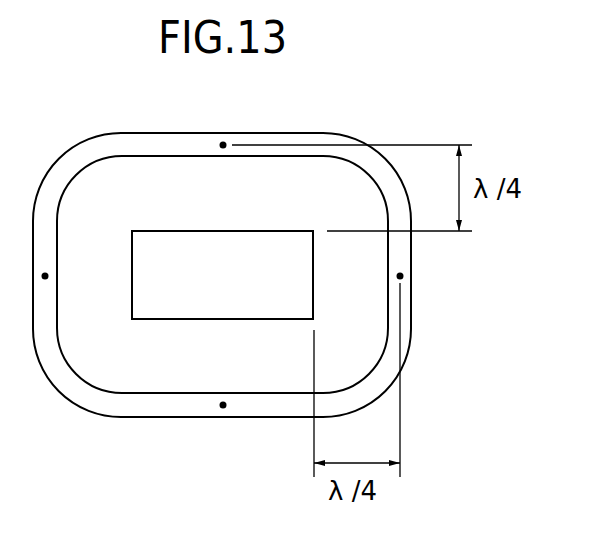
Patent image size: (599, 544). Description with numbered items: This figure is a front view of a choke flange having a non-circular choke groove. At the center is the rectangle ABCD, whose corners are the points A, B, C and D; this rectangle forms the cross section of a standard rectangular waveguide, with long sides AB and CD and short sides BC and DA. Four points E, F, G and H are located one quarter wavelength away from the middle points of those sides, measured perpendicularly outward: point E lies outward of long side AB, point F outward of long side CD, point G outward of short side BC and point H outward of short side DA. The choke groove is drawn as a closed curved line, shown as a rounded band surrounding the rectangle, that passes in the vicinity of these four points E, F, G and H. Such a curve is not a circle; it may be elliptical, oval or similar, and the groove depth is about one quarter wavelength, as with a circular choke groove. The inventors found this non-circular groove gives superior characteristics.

The corner point of rectangle A is at (143, 250).
The corner point of rectangle B is at (300, 250).
The corner point of rectangle C is at (300, 302).
The corner point of rectangle D is at (144, 302).
The point near choke groove E is at (222, 125).
The point near choke groove F is at (222, 428).
The point near choke groove G is at (383, 276).
The point near choke groove H is at (63, 276).